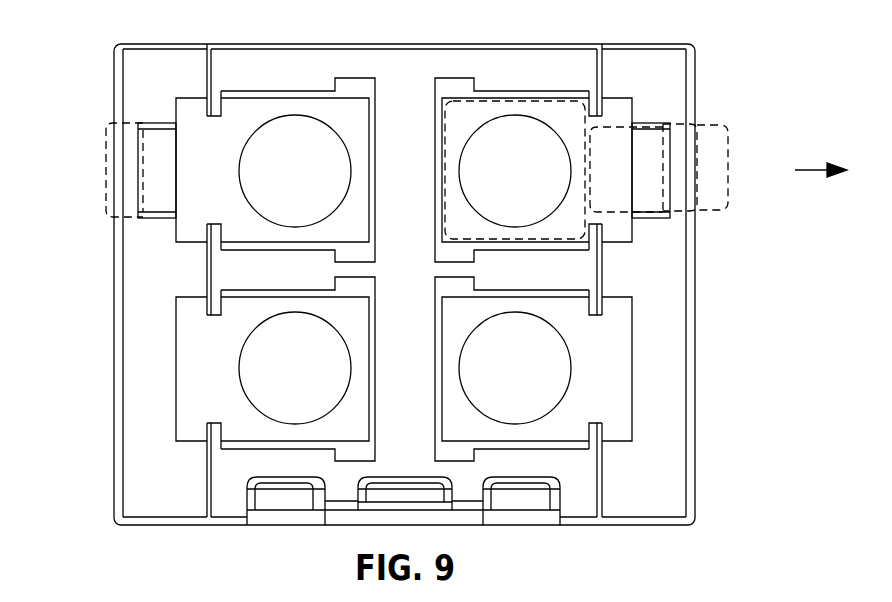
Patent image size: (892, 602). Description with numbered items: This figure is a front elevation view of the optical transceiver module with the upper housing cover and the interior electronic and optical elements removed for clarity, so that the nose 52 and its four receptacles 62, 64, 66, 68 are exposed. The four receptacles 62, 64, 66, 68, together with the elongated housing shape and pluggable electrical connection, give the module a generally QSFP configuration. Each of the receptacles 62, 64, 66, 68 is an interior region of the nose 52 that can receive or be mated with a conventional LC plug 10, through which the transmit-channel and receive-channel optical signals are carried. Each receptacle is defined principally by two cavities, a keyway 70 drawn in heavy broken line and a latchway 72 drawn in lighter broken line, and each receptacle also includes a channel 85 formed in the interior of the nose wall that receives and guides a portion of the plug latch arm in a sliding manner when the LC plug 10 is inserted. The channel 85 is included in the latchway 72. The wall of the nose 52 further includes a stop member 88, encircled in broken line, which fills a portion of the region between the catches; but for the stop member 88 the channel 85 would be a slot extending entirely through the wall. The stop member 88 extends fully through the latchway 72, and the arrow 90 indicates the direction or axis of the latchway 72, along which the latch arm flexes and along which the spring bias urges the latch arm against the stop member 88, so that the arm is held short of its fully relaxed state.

The LC plug 10 is at (107, 119).
The nose 52 is at (114, 268).
The receptacle 62 is at (502, 182).
The receptacle 64 is at (502, 379).
The receptacle 66 is at (282, 182).
The receptacle 68 is at (282, 379).
The keyway 70 is at (548, 100).
The latchway 72 is at (728, 197).
The channel 85 is at (180, 125).
The stop member 88 is at (110, 177).
The arrow 90 is at (810, 168).